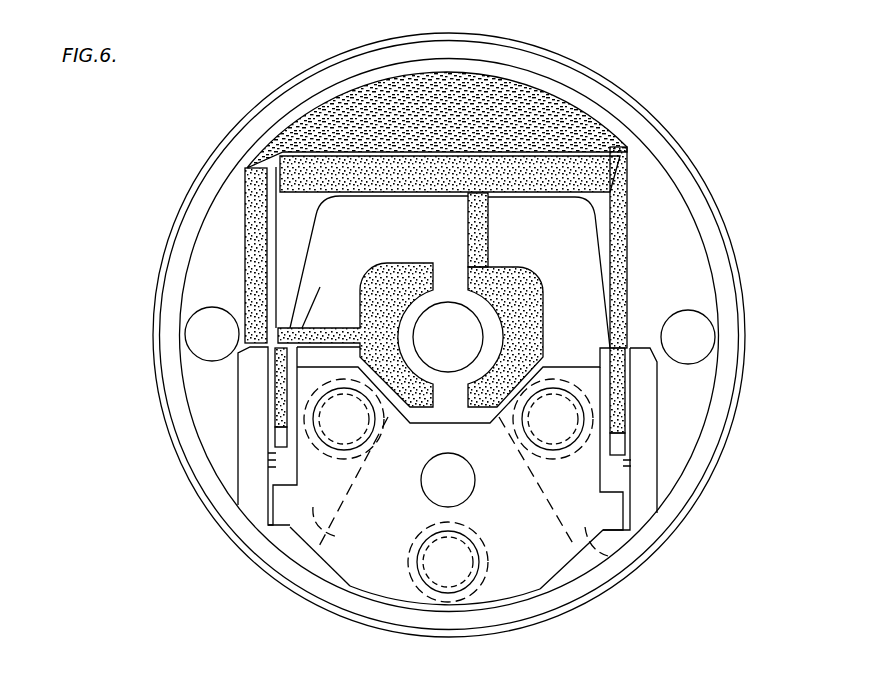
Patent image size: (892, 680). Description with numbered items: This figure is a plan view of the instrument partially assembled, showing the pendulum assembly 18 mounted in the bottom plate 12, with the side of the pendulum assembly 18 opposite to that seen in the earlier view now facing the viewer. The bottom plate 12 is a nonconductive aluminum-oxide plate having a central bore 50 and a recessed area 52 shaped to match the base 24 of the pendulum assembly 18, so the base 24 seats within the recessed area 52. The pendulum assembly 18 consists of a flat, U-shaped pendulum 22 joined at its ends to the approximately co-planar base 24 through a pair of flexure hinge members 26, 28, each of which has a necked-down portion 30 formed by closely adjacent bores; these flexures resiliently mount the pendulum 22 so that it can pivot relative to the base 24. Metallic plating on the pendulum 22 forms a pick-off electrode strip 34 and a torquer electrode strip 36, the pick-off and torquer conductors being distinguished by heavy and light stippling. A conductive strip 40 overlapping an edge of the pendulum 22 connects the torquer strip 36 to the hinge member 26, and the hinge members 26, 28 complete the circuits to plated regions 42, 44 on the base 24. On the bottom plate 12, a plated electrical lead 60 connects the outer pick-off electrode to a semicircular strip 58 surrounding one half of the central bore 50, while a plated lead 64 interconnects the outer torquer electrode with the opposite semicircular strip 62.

The bottom plate 12 is at (626, 88).
The pendulum assembly 18 is at (540, 91).
The pendulum 22 is at (297, 223).
The base 24 is at (537, 545).
The flexure hinge member 26 is at (627, 427).
The flexure hinge member 28 is at (272, 418).
The necked-down portion 30 is at (267, 472).
The pick-off electrode strip 34 is at (608, 146).
The torquer electrode strip 36 is at (542, 170).
The conductive strip 40 is at (627, 245).
The plated region 42 is at (611, 560).
The plated region 44 is at (328, 530).
The central bore 50 is at (475, 308).
The recessed area 52 is at (250, 387).
The semicircular strip 58 is at (402, 280).
The plated electrical lead 60 is at (253, 270).
The semicircular strip 62 is at (537, 317).
The plated lead 64 is at (485, 237).